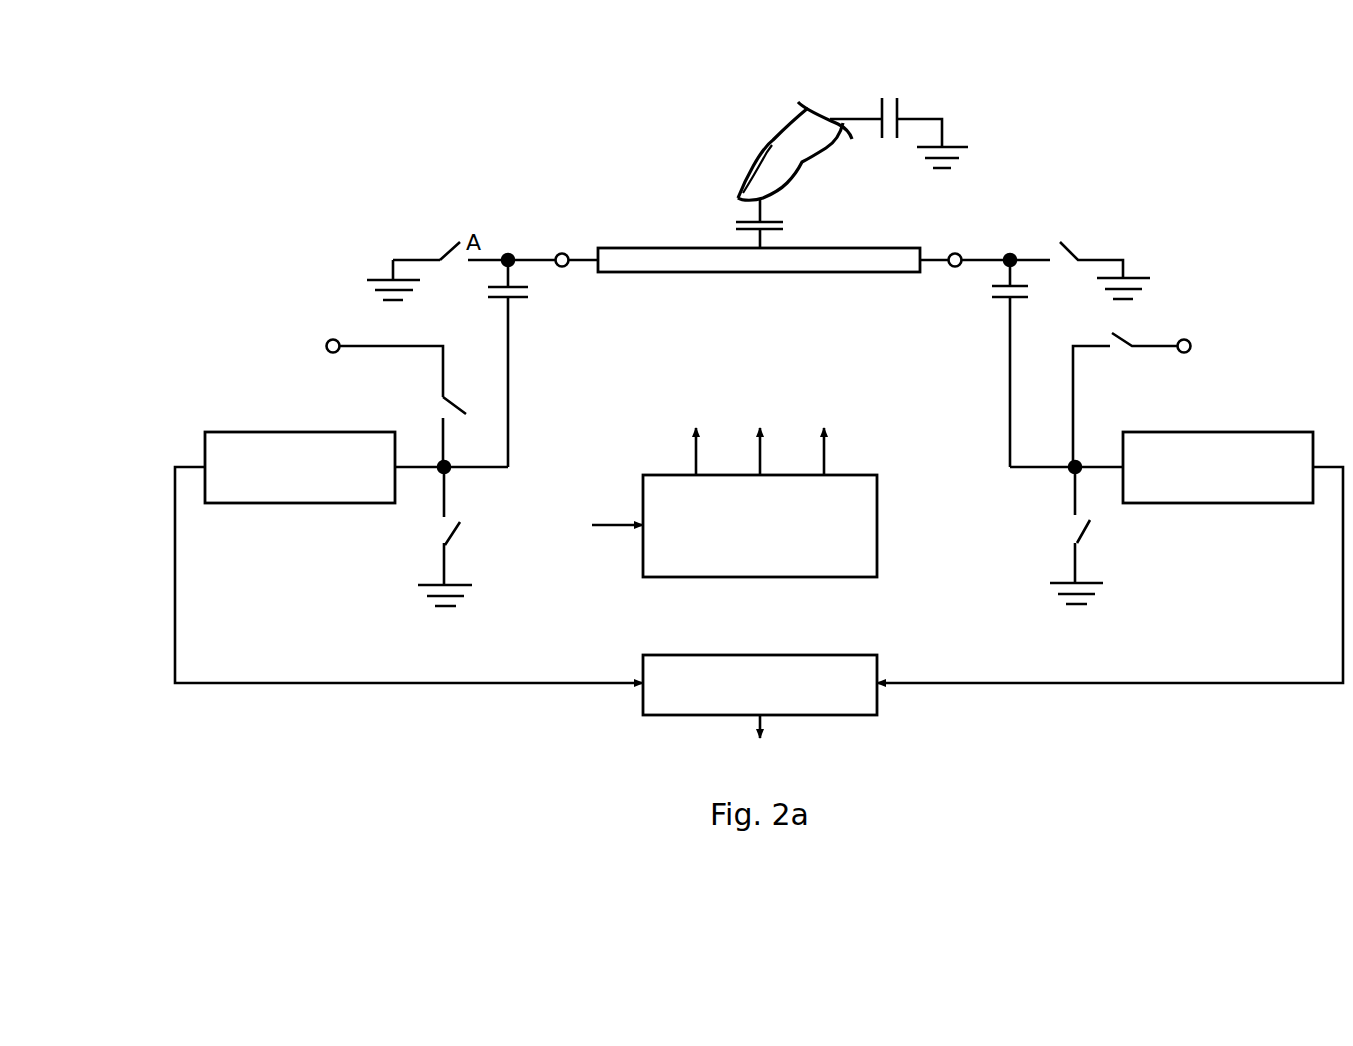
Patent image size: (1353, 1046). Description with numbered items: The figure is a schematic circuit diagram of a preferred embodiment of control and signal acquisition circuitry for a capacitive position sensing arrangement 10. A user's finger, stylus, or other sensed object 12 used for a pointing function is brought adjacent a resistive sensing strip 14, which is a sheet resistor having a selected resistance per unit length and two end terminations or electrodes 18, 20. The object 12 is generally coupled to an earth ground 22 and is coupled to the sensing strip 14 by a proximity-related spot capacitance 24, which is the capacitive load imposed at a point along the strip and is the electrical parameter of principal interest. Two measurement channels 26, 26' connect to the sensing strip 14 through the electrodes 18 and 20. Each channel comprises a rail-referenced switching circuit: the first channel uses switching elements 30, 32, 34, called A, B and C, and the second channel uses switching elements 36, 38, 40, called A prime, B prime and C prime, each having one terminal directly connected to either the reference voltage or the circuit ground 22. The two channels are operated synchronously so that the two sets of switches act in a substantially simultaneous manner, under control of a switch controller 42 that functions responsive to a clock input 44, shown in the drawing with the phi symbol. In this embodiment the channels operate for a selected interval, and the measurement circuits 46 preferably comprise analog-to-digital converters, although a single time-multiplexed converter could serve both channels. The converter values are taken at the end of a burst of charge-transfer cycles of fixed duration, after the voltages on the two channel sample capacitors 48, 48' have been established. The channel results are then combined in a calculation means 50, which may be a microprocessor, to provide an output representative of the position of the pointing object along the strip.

The capacitive sensing apparatus 10 is at (1156, 254).
The sensed object 12 is at (776, 140).
The resistive sensing strip 14 is at (617, 249).
The end termination electrode 18 is at (562, 253).
The end termination electrode 20 is at (958, 252).
The ground 22 is at (953, 168).
The spot capacitance 24 is at (738, 222).
The channel 26 is at (409, 575).
The channel 26' is at (1110, 575).
The switching element 30 is at (460, 243).
The switching element 32 is at (456, 407).
The switching element 34 is at (458, 532).
The switching element 36 is at (1066, 243).
The switching element 38 is at (1125, 348).
The switching element 40 is at (1085, 523).
The switch controller 42 is at (735, 578).
The clock input 44 is at (585, 540).
The measurement circuit 46 is at (237, 432).
The sample capacitor 48 is at (532, 363).
The sample capacitor 48' is at (998, 363).
The calculation means 50 is at (843, 717).